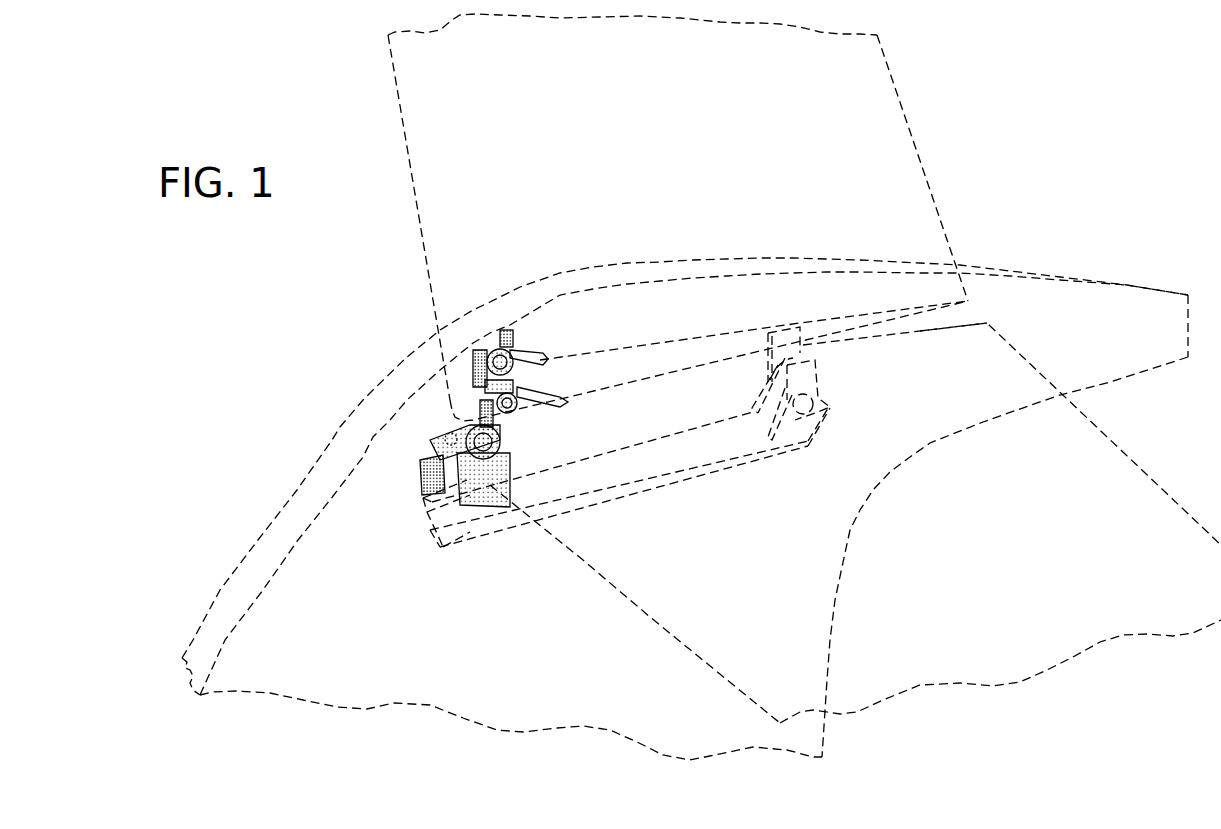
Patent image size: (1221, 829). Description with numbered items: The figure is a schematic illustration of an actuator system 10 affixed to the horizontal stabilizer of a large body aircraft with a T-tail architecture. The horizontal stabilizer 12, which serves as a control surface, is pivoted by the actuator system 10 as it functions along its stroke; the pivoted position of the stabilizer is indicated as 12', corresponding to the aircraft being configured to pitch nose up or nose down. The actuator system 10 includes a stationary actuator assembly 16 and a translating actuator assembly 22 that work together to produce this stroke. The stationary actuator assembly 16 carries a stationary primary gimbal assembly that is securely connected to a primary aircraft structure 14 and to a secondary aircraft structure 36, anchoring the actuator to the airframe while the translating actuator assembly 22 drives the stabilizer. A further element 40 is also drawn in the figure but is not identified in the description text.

The actuator system 10 is at (410, 416).
The pivoted horizontal stabilizer position 12' is at (645, 217).
The horizontal stabilizer 12 is at (635, 604).
The primary aircraft structure 14 is at (370, 708).
The stationary actuator assembly 16 is at (412, 476).
The translating actuator assembly 22 is at (478, 350).
The secondary aircraft structure 36 is at (460, 512).
The support rod 40 is at (536, 403).